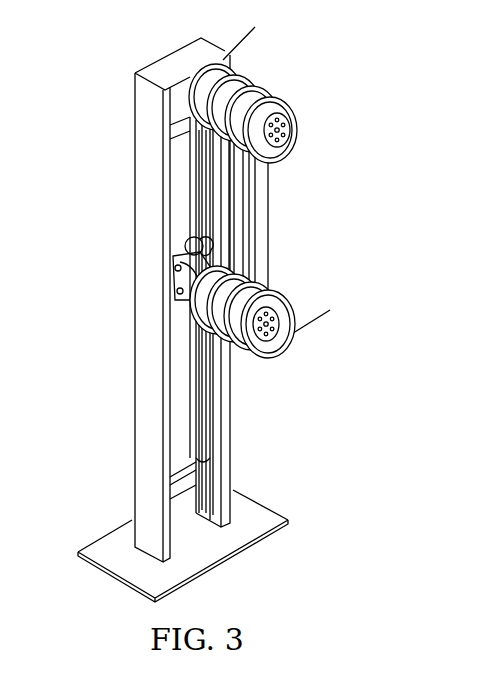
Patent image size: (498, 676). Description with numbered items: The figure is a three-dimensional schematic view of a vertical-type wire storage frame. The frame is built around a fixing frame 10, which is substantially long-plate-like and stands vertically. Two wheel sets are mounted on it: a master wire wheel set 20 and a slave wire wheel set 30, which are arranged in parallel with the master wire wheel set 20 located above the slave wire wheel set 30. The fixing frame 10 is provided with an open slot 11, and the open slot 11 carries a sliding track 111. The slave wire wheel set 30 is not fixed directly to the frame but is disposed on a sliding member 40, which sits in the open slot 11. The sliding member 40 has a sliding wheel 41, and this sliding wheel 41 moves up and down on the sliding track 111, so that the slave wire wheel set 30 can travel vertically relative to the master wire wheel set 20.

The fixing frame 10 is at (183, 311).
The open slot 11 is at (183, 193).
The sliding track 111 is at (197, 225).
The master wire wheel set 20 is at (292, 102).
The slave wire wheel set 30 is at (288, 295).
The sliding member 40 is at (190, 283).
The sliding wheel 41 is at (188, 248).